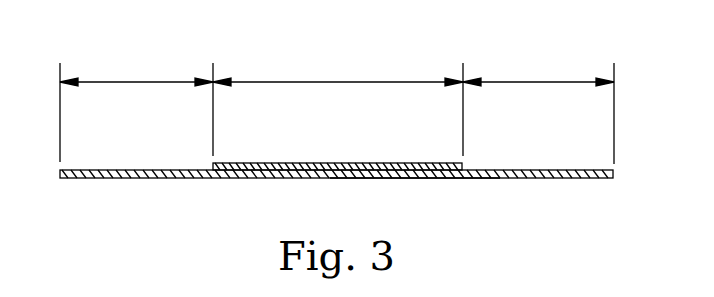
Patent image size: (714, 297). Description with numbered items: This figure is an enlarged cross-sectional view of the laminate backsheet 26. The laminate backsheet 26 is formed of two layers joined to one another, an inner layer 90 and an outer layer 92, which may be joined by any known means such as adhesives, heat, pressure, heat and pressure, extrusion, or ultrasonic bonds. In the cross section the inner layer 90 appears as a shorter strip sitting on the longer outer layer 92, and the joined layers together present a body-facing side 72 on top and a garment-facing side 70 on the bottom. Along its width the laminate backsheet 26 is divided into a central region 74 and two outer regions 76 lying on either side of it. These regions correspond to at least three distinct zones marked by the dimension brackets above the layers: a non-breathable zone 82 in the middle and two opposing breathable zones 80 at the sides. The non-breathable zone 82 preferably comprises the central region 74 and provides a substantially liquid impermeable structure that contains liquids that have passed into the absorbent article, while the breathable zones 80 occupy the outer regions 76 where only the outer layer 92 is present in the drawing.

The laminate backsheet 26 is at (319, 184).
The garment-facing side 70 is at (336, 170).
The body-facing side 72 is at (110, 170).
The central region 74 is at (338, 82).
The outer regions 76 is at (137, 82).
The breathable zones 80 is at (337, 90).
The non-breathable zone 82 is at (338, 86).
The inner layer 90 is at (370, 163).
The outer layer 92 is at (426, 178).